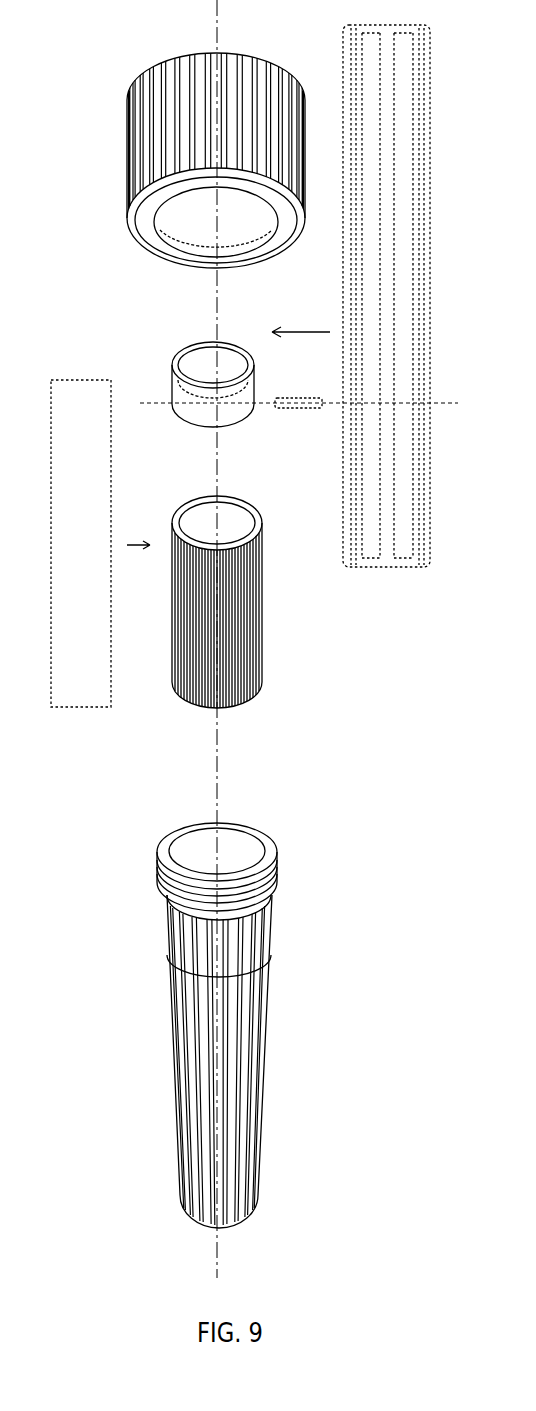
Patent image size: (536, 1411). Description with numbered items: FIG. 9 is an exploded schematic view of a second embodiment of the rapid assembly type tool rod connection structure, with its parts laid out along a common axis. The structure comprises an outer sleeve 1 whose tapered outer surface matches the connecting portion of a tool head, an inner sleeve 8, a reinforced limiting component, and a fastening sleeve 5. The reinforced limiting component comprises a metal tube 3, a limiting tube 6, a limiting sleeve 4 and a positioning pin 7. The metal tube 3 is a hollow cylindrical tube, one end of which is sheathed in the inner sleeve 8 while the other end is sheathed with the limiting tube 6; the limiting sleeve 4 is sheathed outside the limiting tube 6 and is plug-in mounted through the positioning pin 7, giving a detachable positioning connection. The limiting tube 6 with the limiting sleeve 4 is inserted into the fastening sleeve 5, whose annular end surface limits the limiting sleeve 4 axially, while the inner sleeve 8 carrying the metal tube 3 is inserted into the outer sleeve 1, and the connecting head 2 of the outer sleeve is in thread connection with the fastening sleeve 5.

The outer sleeve 1 is at (190, 1104).
The connecting head 2 is at (160, 883).
The metal tube 3 is at (71, 688).
The limiting sleeve 4 is at (183, 388).
The fastening sleeve 5 is at (128, 165).
The limiting tube 6 is at (381, 565).
The positioning pin 7 is at (290, 408).
The inner sleeve 8 is at (178, 693).